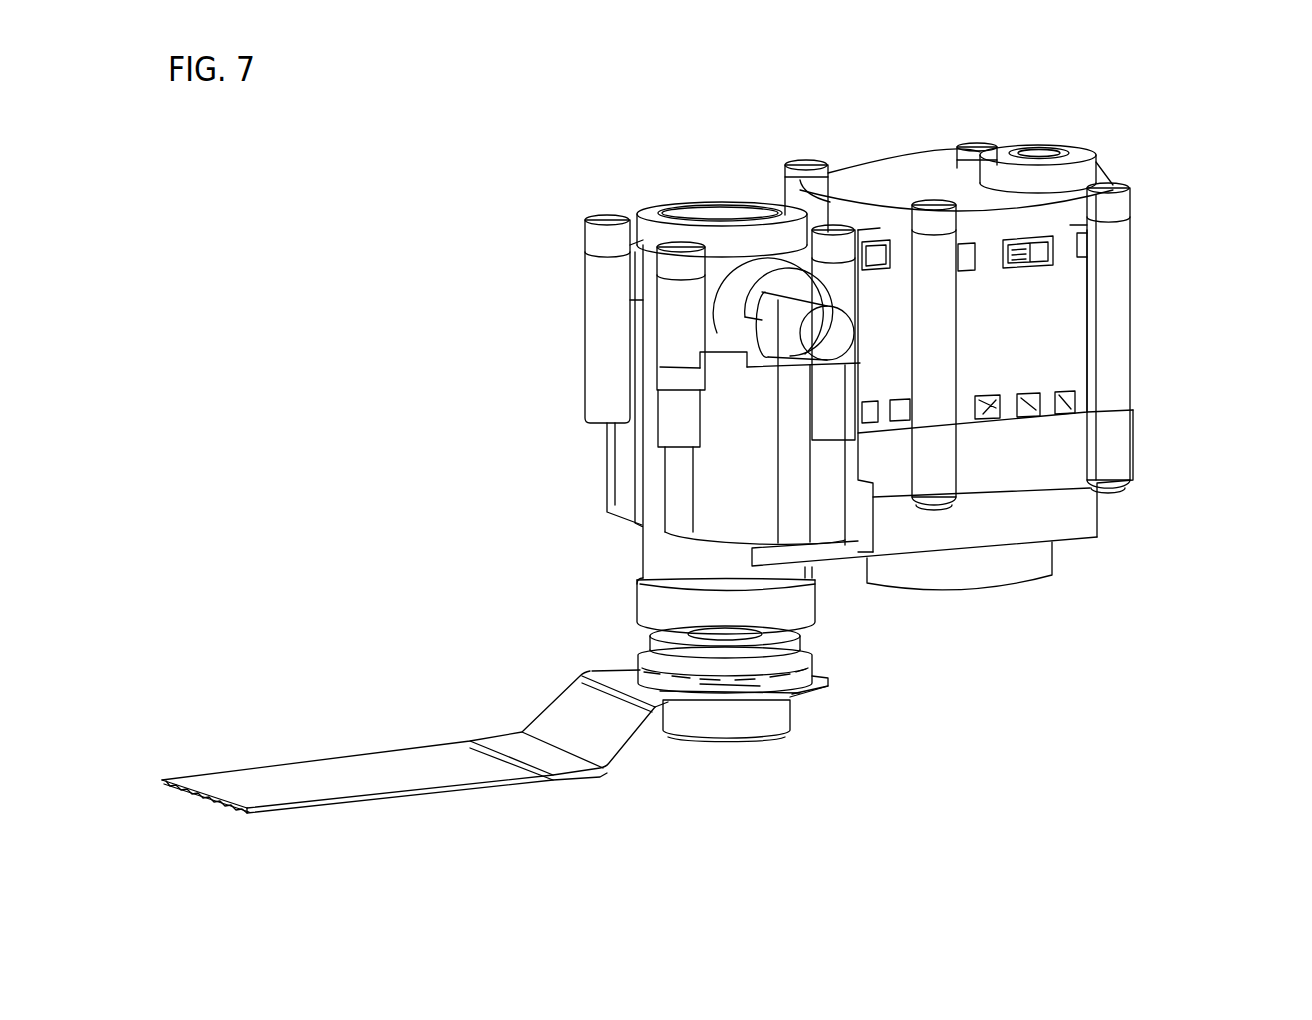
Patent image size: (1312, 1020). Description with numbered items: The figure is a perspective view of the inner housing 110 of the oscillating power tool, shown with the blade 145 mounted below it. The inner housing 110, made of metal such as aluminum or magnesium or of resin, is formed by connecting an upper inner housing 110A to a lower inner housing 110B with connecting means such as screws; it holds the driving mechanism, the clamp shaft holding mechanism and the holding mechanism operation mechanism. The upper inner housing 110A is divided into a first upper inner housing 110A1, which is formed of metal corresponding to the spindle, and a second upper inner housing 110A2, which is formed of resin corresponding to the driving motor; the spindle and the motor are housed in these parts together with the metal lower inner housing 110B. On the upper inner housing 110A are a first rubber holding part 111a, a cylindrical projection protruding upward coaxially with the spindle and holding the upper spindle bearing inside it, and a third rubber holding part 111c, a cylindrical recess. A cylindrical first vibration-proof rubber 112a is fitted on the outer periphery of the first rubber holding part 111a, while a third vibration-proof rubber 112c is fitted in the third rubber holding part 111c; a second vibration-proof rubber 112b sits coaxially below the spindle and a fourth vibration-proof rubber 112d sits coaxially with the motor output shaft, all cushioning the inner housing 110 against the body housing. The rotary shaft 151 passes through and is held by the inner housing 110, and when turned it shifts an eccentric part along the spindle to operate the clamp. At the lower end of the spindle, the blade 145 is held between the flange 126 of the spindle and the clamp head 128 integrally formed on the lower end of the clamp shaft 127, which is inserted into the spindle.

The inner housing 110 is at (1158, 268).
The upper inner housing 110A is at (1162, 372).
The first upper inner housing 110A1 is at (642, 287).
The second upper inner housing 110A2 is at (1077, 313).
The lower inner housing 110B is at (1162, 457).
The first rubber holding part 111a is at (715, 200).
The third rubber holding part 111c is at (1096, 160).
The first vibration-proof rubber 112a is at (653, 208).
The second vibration-proof rubber 112b is at (653, 605).
The third vibration-proof rubber 112c is at (1062, 150).
The fourth vibration-proof rubber 112d is at (1017, 567).
The flange 126 is at (802, 667).
The clamp shaft 127 is at (756, 752).
The clamp head 128 is at (766, 710).
The blade 145 is at (387, 775).
The rotary shaft 151 is at (777, 322).